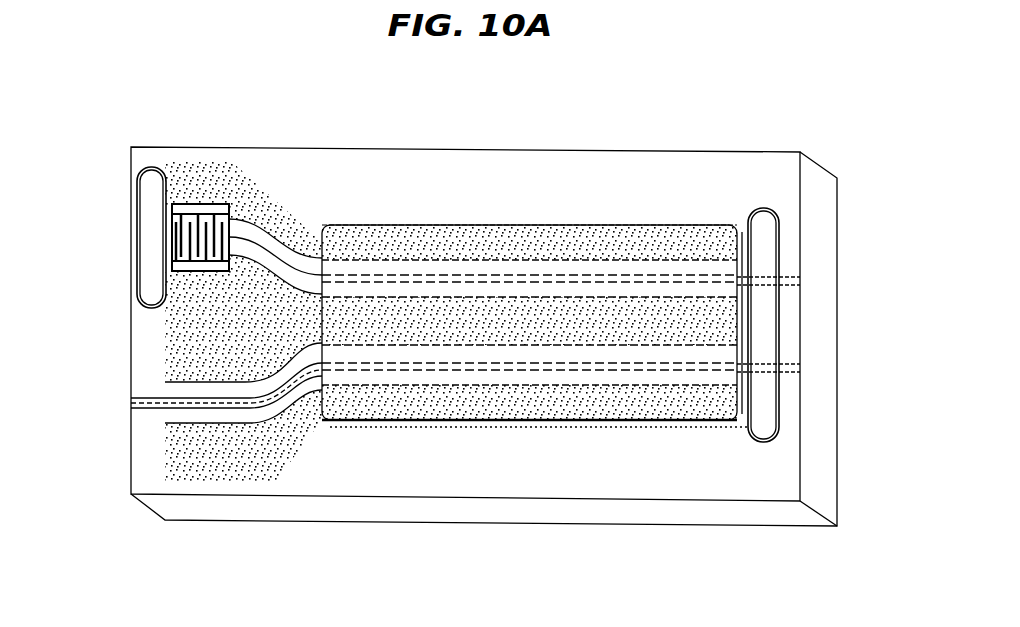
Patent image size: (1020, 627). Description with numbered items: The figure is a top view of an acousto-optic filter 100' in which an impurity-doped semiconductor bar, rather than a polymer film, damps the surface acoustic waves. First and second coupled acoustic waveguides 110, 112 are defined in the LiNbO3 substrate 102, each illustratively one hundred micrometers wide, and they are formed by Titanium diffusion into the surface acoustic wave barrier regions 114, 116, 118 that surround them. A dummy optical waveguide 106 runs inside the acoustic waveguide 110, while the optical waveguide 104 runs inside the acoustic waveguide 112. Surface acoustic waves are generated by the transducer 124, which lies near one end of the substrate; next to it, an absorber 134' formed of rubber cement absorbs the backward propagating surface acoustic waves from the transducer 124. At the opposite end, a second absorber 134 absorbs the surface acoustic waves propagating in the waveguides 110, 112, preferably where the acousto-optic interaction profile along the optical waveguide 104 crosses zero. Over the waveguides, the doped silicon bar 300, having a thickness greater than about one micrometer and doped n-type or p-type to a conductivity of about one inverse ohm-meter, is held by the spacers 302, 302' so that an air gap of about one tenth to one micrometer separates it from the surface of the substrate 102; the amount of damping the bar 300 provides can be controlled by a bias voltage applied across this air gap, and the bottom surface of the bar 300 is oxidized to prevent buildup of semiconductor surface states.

The acousto-optic filter 100' is at (801, 95).
The substrate 102 is at (698, 150).
The optical waveguide 104 is at (608, 367).
The dummy optical waveguide 106 is at (612, 280).
The first acoustic waveguide 110 is at (455, 267).
The second acoustic waveguide 112 is at (433, 378).
The surface acoustic wave barrier region 114 is at (188, 336).
The surface acoustic wave barrier region 116 is at (290, 192).
The surface acoustic wave barrier region 118 is at (218, 462).
The transducer 124 is at (205, 204).
The absorber 134 is at (769, 391).
The absorber 134' is at (106, 237).
The doped silicon bar 300 is at (534, 232).
The spacer 302 is at (529, 176).
The spacer 302' is at (529, 480).